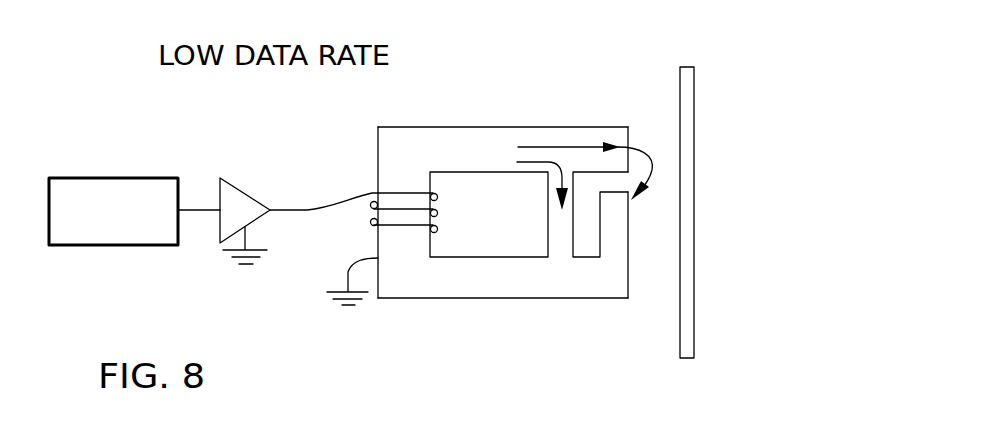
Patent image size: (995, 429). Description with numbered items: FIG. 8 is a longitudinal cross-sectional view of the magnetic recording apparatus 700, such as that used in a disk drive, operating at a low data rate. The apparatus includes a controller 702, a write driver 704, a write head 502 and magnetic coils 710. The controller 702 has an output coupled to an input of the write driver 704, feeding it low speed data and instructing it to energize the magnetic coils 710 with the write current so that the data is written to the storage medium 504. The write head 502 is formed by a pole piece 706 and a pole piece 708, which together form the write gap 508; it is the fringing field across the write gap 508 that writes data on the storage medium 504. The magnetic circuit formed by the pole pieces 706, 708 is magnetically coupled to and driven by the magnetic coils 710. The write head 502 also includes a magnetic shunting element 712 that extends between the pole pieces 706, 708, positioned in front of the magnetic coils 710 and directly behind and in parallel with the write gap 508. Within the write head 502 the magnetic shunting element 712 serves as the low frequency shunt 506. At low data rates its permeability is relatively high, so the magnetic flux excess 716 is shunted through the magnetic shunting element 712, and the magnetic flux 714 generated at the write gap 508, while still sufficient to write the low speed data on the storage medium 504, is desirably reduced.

The write head 502 is at (580, 181).
The storage medium 504 is at (694, 137).
The low frequency shunt 506 is at (482, 331).
The write gap 508 is at (632, 184).
The magnetic recording apparatus 700 is at (352, 361).
The controller 702 is at (79, 178).
The write driver 704 is at (233, 186).
The pole piece 706 is at (537, 127).
The pole piece 708 is at (560, 298).
The magnetic coils 710 is at (372, 223).
The magnetic shunting element 712 is at (548, 228).
The magnetic flux 714 is at (653, 172).
The magnetic flux excess 716 is at (552, 192).